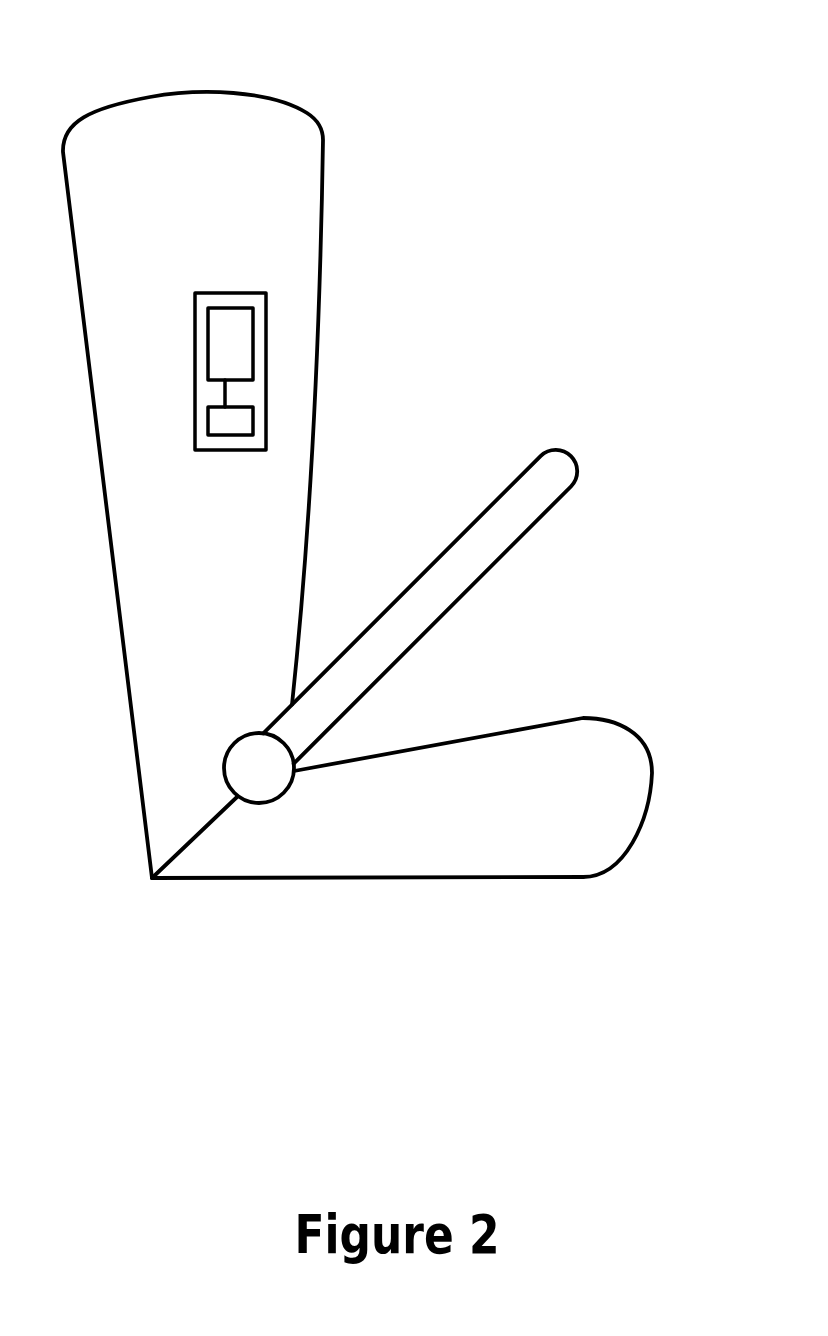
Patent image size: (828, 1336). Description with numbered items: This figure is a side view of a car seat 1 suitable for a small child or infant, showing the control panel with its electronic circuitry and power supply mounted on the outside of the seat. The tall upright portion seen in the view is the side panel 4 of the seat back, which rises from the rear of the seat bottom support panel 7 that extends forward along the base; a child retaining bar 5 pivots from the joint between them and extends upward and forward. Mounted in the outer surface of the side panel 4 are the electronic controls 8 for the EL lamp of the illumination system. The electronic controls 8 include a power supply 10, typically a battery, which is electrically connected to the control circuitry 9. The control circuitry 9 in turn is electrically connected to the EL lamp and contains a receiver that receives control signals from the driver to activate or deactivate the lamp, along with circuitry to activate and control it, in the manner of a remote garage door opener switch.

The car seat 1 is at (553, 176).
The side panel 4 is at (150, 123).
The child retaining bar 5 is at (510, 518).
The seat bottom support panel 7 is at (637, 775).
The electronic controls 8 is at (222, 297).
The control circuitry 9 is at (223, 350).
The power supply 10 is at (237, 420).